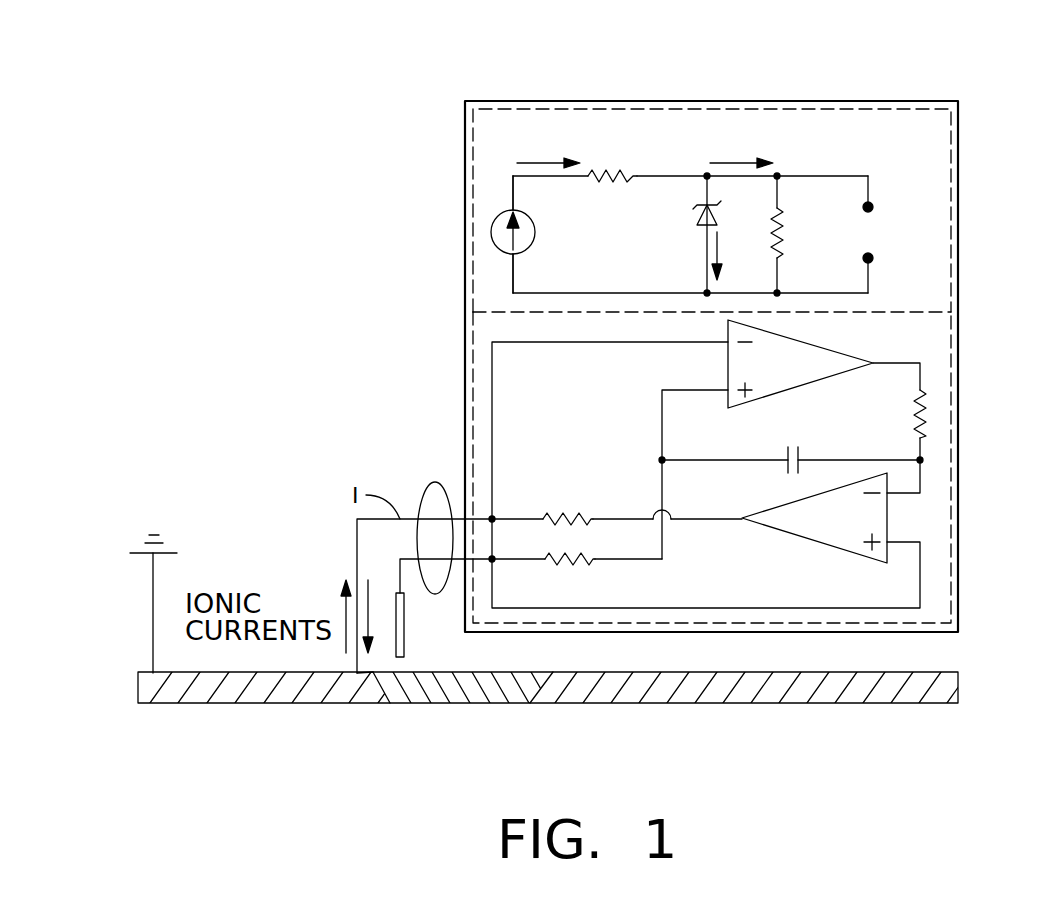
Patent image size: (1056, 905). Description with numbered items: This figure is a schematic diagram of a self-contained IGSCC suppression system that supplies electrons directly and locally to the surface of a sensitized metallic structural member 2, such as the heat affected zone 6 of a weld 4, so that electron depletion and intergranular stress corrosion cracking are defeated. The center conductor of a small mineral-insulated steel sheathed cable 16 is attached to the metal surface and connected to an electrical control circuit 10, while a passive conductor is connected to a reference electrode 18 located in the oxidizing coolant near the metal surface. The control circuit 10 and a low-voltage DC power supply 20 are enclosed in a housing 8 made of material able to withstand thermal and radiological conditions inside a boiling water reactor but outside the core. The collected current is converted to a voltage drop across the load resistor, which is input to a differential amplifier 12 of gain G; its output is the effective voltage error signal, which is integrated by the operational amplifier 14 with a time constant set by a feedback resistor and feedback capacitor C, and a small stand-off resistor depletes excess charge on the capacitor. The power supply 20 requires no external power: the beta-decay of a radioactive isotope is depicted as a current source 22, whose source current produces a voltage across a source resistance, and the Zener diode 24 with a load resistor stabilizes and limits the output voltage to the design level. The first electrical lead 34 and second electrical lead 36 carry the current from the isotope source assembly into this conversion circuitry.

The sensitized metallic structural member 2 is at (713, 703).
The weld 4 is at (475, 695).
The heat affected zone 6 is at (362, 686).
The housing 8 is at (465, 257).
The electrical control circuit 10 is at (760, 467).
The differential amplifier 12 is at (823, 345).
The operational amplifier 14 is at (810, 540).
The mineral-insulated steel sheathed cable 16 is at (430, 483).
The reference electrode 18 is at (404, 647).
The DC power supply 20 is at (725, 210).
The current source 22 is at (535, 232).
The Zener diode 24 is at (698, 213).
The first electrical lead 34 is at (512, 273).
The second electrical lead 36 is at (512, 192).